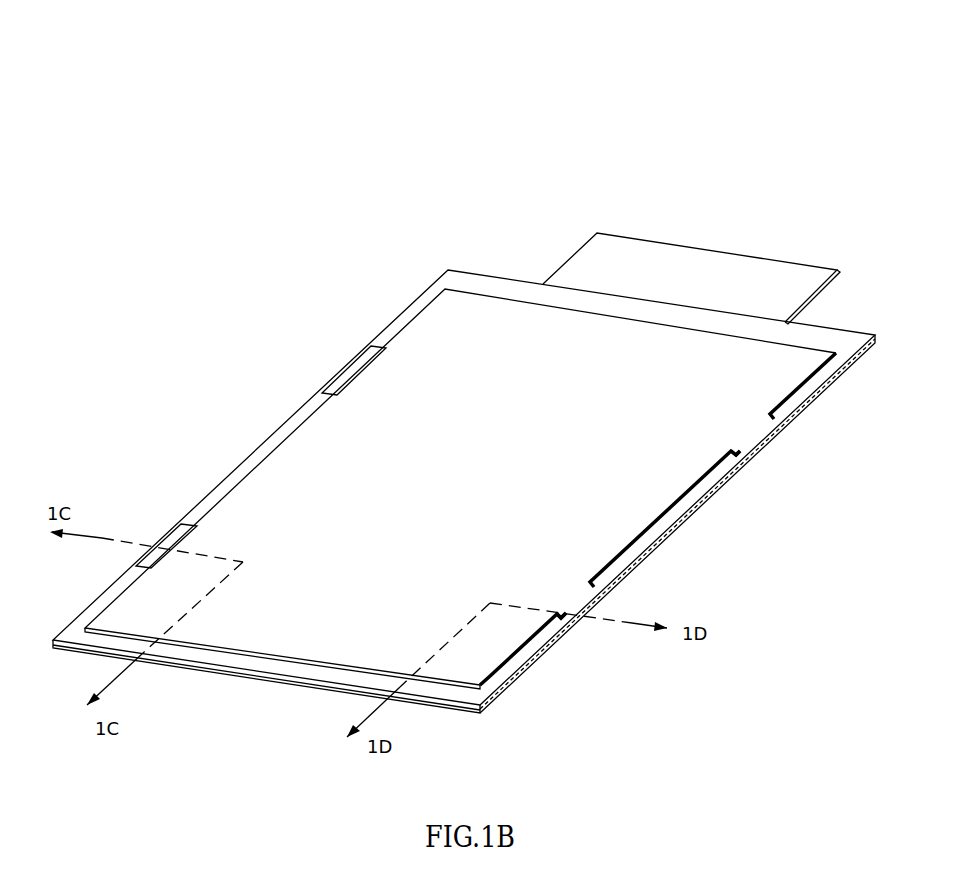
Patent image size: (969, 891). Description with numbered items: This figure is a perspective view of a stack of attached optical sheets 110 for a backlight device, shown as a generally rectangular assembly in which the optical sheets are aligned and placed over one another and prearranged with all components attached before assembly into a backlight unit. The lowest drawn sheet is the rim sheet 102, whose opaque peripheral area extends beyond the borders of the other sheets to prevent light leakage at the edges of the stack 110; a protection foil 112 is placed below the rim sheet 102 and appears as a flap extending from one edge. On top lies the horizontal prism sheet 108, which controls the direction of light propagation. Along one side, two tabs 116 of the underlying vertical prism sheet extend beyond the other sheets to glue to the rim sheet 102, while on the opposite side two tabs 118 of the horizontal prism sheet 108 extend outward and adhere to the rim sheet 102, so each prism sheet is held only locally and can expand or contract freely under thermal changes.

The stack of optical sheets 110 is at (718, 155).
The rim sheet 102 is at (507, 290).
The horizontal prism sheet 108 is at (491, 487).
The protection foil 112 is at (612, 250).
The tabs 116 is at (342, 368).
The tabs 118 is at (753, 433).